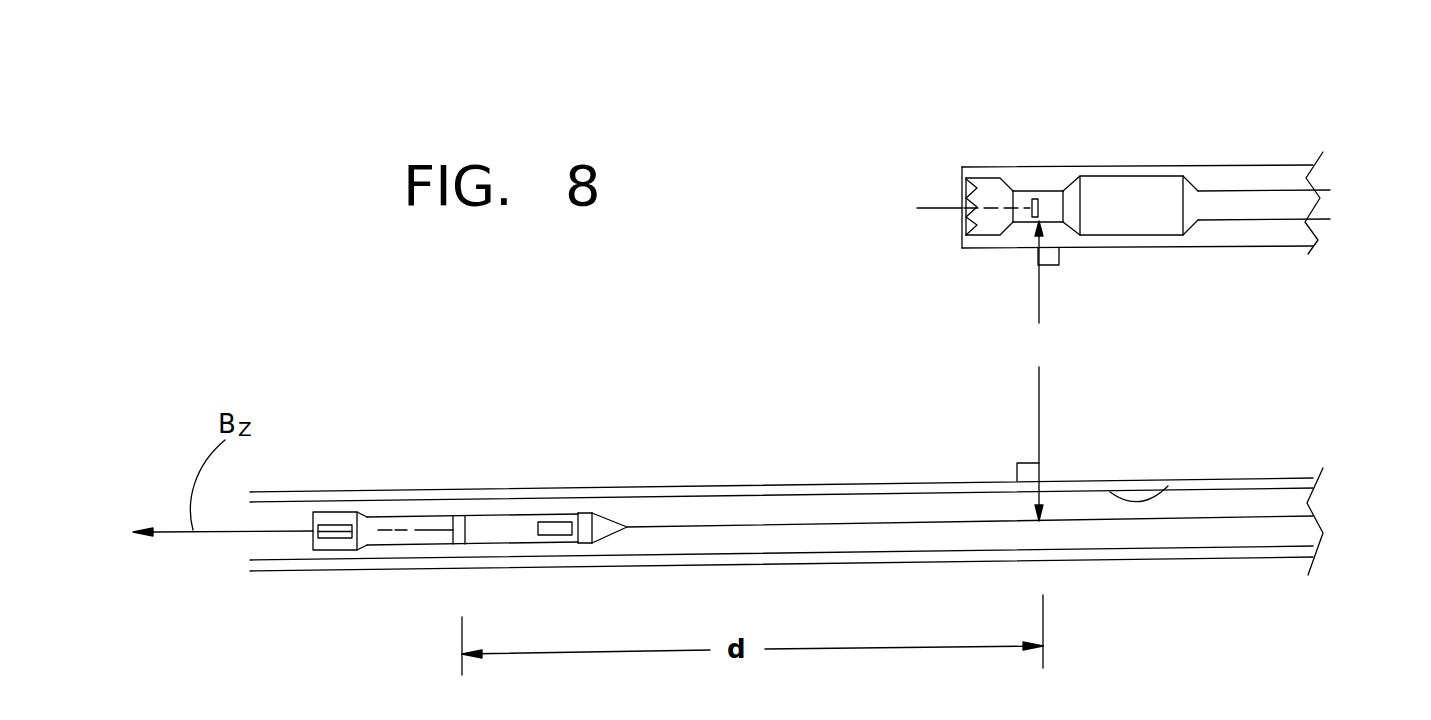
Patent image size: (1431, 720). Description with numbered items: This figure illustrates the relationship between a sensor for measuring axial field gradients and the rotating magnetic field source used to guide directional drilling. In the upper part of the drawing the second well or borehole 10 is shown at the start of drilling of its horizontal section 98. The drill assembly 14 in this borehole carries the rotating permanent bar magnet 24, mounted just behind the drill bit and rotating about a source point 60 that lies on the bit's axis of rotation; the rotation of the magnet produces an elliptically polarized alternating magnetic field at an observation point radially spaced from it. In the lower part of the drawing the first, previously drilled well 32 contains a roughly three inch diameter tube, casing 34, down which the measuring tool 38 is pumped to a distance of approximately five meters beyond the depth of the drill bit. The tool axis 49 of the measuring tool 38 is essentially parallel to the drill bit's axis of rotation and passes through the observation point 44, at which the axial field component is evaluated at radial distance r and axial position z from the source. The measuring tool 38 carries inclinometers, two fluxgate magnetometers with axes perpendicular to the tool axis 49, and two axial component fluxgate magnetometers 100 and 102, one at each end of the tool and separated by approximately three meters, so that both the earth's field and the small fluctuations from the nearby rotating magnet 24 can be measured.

The borehole 10 is at (1218, 167).
The drill assembly 14 is at (1132, 160).
The permanent bar magnet 24 is at (1042, 202).
The well 32 is at (705, 490).
The casing 34 is at (1168, 484).
The measuring tool 38 is at (505, 530).
The observation point 44 is at (458, 528).
The tool axis 49 is at (378, 530).
The source point 60 is at (935, 208).
The horizontal section 98 is at (1316, 132).
The axial component fluxgate magnetometer 100 is at (337, 537).
The axial component fluxgate magnetometer 102 is at (560, 523).